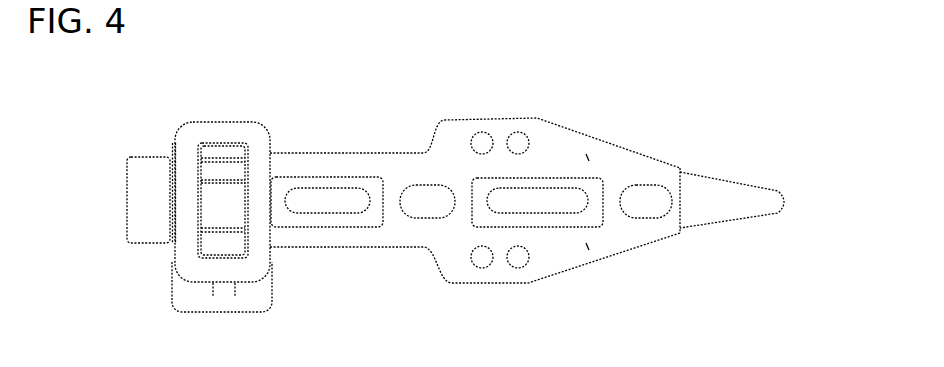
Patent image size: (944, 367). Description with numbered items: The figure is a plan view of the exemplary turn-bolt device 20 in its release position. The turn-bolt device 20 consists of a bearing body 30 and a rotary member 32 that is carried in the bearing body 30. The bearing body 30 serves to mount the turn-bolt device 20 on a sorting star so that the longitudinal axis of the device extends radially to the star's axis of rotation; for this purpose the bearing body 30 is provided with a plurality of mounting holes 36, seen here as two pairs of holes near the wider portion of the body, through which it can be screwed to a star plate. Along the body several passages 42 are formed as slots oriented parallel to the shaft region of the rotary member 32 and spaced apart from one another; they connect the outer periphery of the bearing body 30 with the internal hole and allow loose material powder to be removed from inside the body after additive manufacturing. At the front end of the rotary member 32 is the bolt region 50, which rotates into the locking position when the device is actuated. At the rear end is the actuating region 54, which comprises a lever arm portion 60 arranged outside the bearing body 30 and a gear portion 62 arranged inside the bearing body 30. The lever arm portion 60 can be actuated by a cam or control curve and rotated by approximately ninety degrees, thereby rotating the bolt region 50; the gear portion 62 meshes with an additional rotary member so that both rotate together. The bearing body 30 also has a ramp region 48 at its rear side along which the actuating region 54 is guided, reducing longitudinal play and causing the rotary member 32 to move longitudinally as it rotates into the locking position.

The turn-bolt device 20 is at (458, 58).
The bearing body 30 is at (373, 160).
The rotary member 32 is at (743, 237).
The mounting holes 36 is at (517, 147).
The passage 42 is at (355, 200).
The ramp region 48 is at (167, 248).
The bolt region 50 is at (713, 188).
The actuating region 54 is at (150, 143).
The lever arm portion 60 is at (132, 203).
The gear portion 62 is at (227, 168).